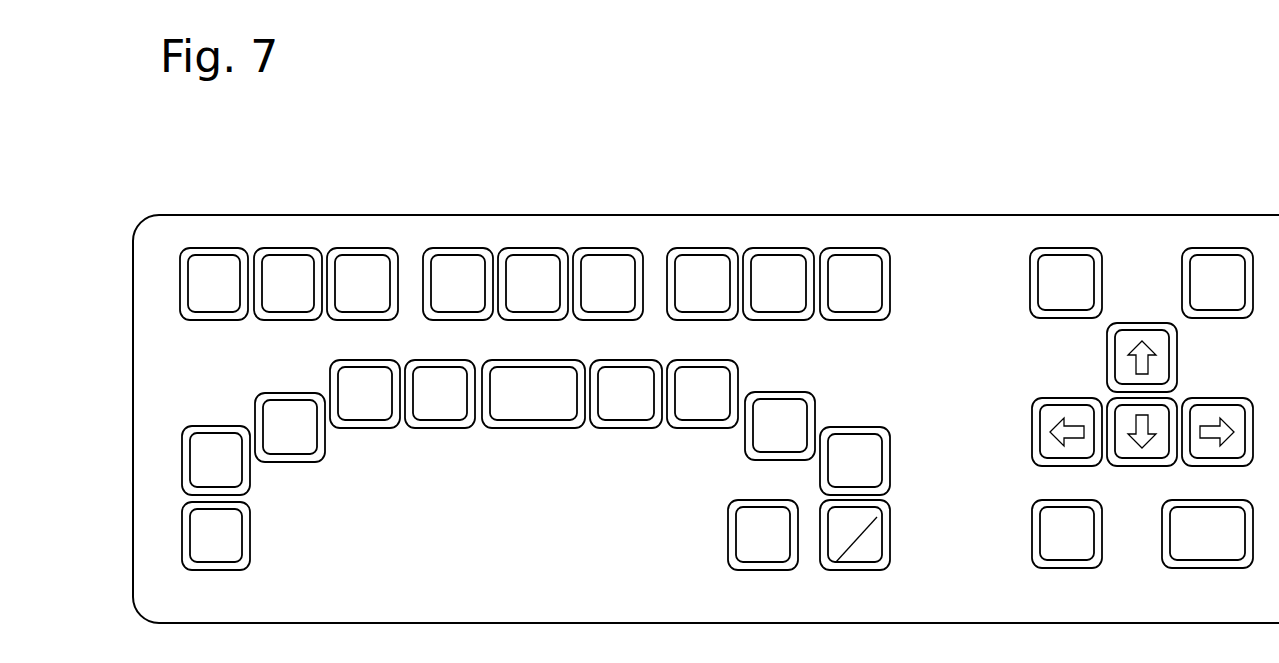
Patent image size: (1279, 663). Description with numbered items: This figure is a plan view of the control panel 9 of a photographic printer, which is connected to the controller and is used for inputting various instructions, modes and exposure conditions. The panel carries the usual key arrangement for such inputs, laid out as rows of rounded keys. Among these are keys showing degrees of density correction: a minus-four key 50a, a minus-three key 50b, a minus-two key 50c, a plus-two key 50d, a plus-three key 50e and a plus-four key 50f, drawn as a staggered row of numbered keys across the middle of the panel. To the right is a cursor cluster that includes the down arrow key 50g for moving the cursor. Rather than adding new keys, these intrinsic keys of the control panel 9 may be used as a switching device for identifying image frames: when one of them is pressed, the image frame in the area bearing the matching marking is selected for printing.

The control panel 9 is at (700, 217).
The "−4" key 50a is at (248, 478).
The "−3" key 50b is at (308, 455).
The "−2" key 50c is at (345, 428).
The "+2" key 50d is at (740, 363).
The "+3" key 50e is at (745, 440).
The "+4" key 50f is at (890, 466).
The down arrow key 50g is at (1127, 470).